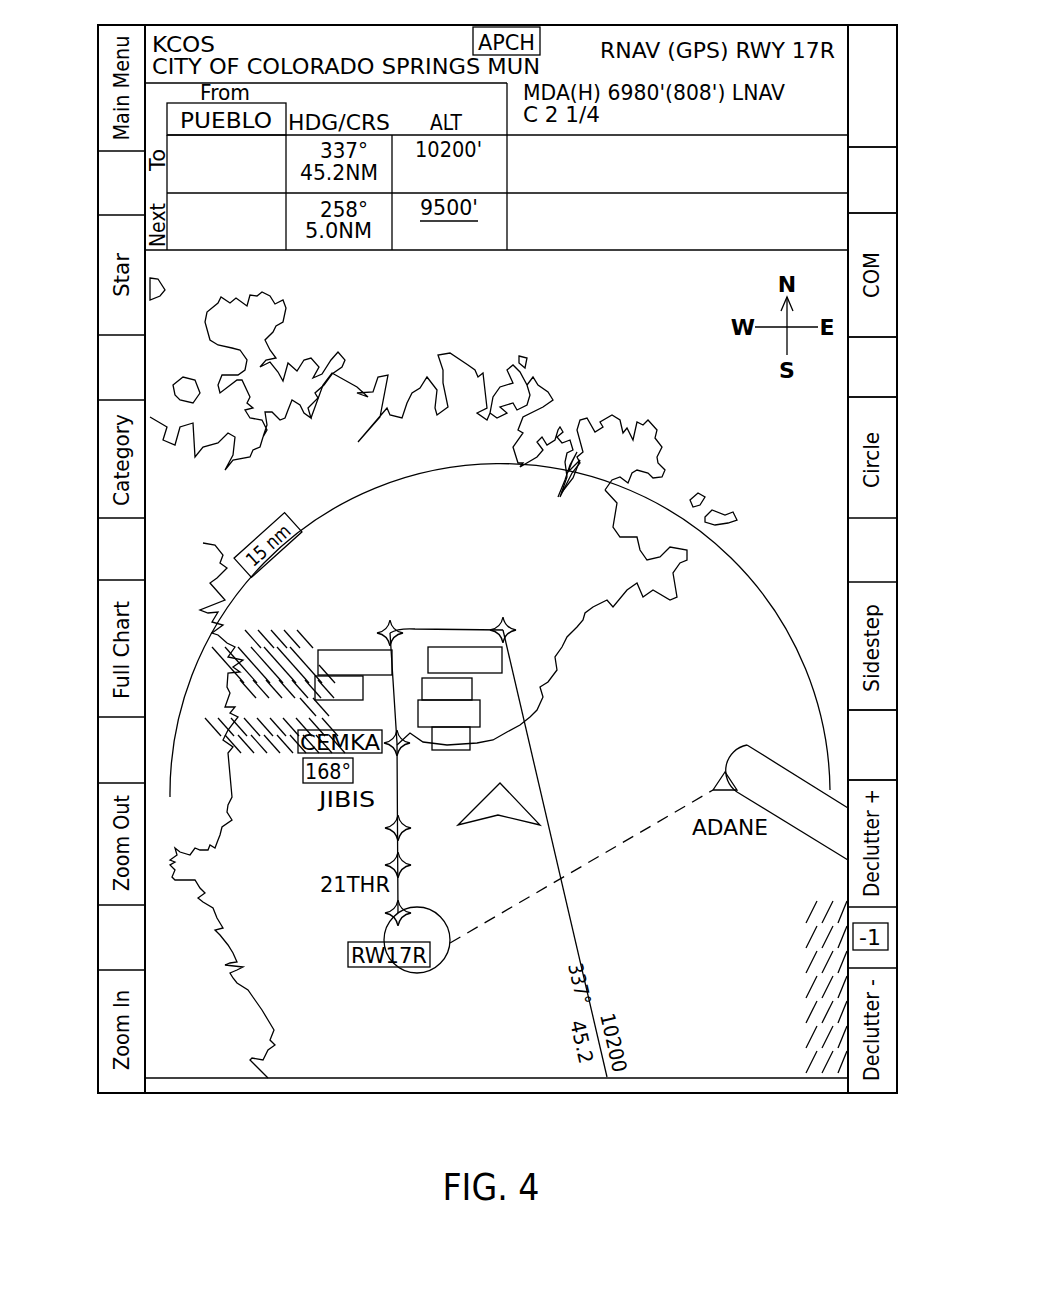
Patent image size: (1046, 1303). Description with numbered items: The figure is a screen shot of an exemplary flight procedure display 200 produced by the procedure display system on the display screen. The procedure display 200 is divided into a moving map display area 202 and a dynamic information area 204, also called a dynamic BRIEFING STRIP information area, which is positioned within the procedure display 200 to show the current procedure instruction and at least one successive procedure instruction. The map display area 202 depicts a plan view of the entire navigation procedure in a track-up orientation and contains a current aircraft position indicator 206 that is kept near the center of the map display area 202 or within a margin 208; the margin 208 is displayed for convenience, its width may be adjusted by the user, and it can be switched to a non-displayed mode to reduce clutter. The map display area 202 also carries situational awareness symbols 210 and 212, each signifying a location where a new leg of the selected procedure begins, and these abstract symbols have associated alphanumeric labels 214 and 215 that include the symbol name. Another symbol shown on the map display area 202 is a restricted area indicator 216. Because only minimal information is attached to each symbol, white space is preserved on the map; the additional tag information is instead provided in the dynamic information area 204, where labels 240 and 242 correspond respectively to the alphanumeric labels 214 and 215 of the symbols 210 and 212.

The flight procedure display 200 is at (902, 503).
The moving map display area 202 is at (848, 381).
The dynamic information area 204 is at (848, 175).
The current aircraft position indicator 206 is at (527, 800).
The margin 208 is at (848, 711).
The situational awareness symbol 210 is at (388, 620).
The situational awareness symbol 212 is at (501, 617).
The alphanumeric label 214 is at (507, 658).
The alphanumeric label 215 is at (340, 650).
The restricted area indicator 216 is at (255, 645).
The label 240 is at (205, 161).
The label 242 is at (205, 220).